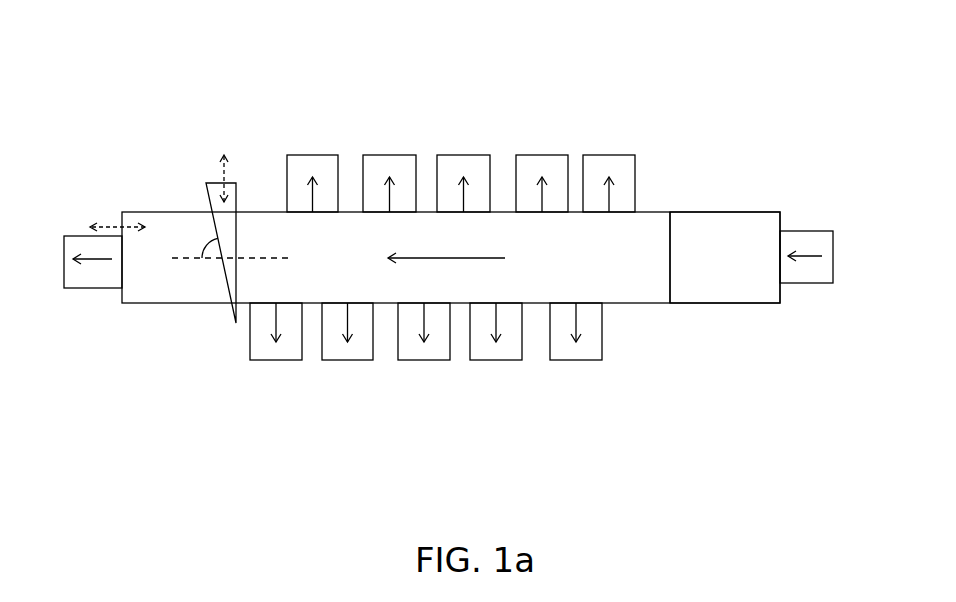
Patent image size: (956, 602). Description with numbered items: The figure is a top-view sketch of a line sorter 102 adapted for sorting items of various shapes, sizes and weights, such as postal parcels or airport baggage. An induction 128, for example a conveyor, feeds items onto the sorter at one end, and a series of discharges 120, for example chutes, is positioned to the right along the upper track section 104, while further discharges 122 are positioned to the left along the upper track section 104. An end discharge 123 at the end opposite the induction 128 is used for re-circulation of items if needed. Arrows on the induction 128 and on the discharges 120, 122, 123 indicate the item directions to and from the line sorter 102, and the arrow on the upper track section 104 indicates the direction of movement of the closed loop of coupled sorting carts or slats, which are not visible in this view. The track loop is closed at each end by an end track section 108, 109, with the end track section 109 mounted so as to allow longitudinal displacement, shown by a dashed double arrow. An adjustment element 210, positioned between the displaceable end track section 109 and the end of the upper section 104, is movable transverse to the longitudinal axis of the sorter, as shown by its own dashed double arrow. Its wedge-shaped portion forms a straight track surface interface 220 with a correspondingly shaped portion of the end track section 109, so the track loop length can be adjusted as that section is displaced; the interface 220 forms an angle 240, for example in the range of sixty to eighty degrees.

The line sorter 102 is at (220, 75).
The upper track section 104 is at (640, 278).
The end track section 108 is at (748, 280).
The displaceable end track section 109 is at (178, 288).
The discharges 120 is at (388, 117).
The discharges 122 is at (425, 382).
The end discharge 123 is at (88, 277).
The induction 128 is at (812, 245).
The adjustment element 210 is at (213, 225).
The track surface interface 220 is at (213, 227).
The angle 240 is at (206, 243).